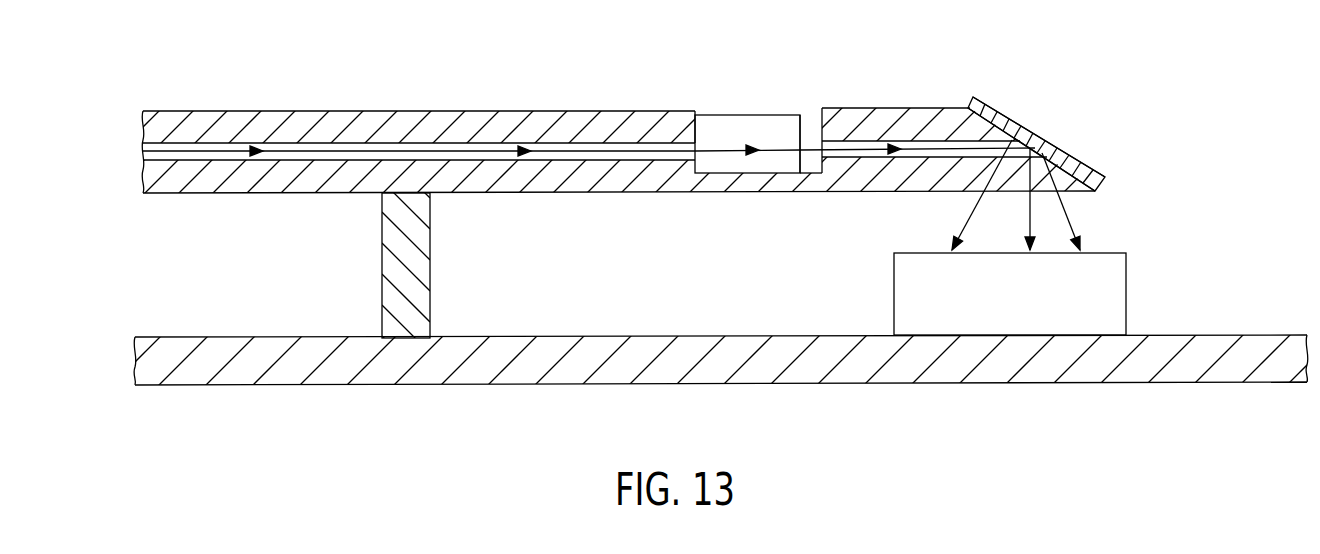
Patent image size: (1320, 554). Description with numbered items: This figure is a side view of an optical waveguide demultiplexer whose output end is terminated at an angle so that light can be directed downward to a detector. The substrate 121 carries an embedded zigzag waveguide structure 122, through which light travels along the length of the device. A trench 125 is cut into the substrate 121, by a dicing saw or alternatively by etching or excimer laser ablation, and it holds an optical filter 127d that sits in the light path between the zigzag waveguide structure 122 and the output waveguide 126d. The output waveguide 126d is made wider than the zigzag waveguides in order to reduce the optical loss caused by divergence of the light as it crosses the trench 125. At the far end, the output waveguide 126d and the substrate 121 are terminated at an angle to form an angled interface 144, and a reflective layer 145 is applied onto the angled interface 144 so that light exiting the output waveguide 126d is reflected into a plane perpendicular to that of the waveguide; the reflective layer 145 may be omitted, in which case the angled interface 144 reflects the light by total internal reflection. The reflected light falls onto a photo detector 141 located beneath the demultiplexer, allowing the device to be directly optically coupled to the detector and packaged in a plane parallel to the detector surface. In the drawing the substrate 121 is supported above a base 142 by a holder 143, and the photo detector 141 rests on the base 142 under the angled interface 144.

The substrate 121 is at (395, 111).
The embedded zigzag waveguide structure 122 is at (143, 146).
The optical filter 127d is at (757, 115).
The trench 125 is at (810, 123).
The output waveguide 126d is at (983, 137).
The reflective layer 145 is at (1072, 156).
The angled interface 144 is at (1078, 188).
The holder 143 is at (430, 268).
The photo detector 141 is at (1128, 270).
The base 142 is at (1217, 335).